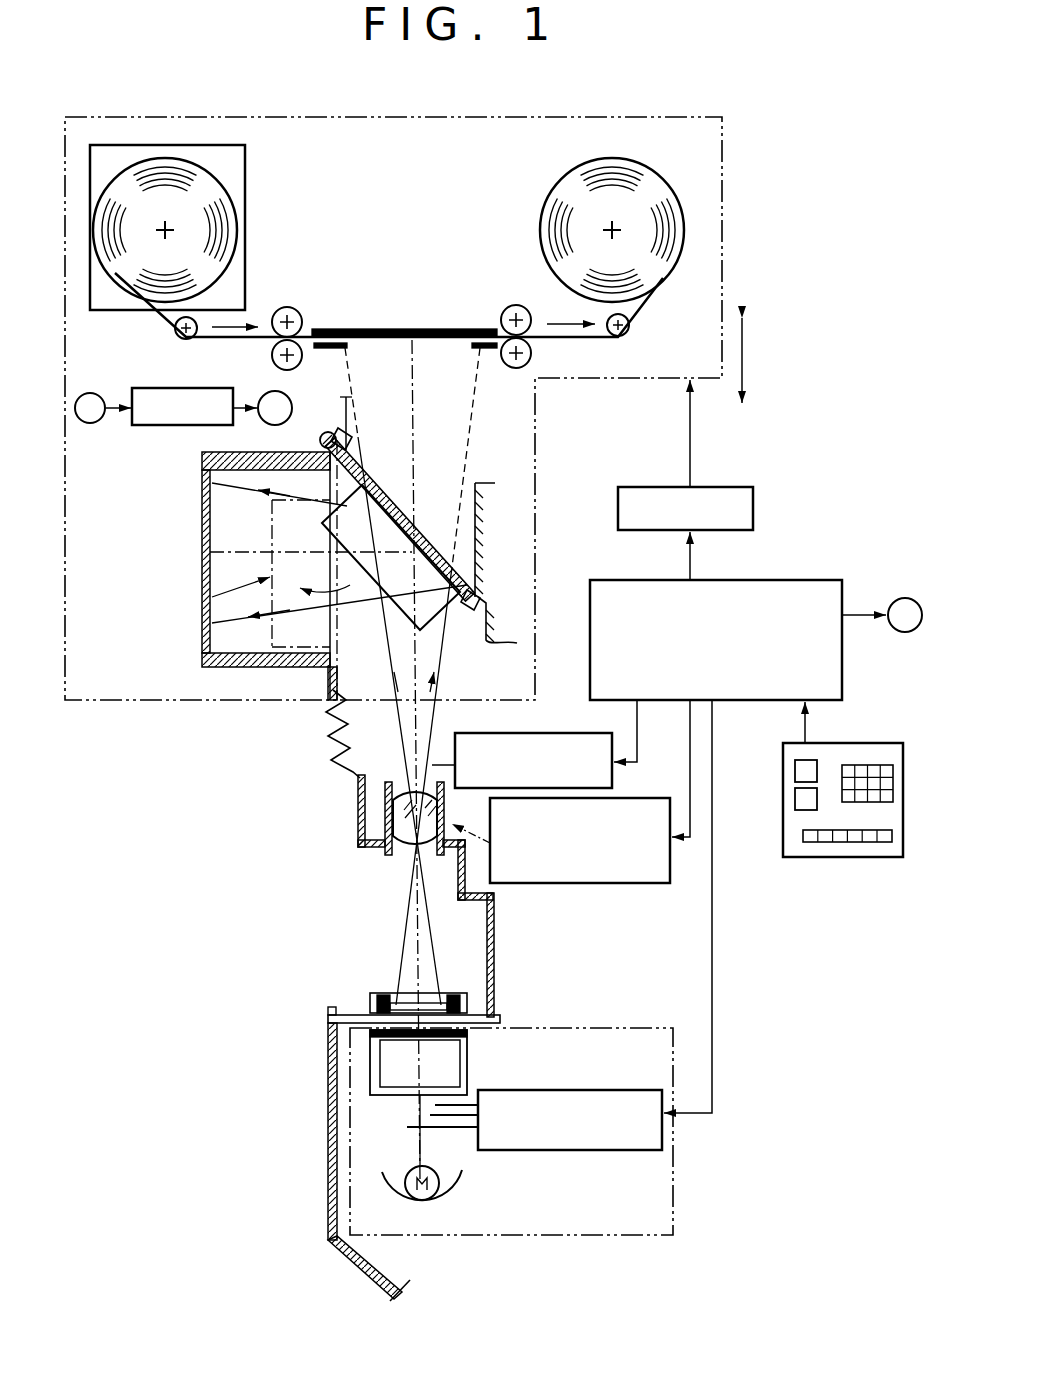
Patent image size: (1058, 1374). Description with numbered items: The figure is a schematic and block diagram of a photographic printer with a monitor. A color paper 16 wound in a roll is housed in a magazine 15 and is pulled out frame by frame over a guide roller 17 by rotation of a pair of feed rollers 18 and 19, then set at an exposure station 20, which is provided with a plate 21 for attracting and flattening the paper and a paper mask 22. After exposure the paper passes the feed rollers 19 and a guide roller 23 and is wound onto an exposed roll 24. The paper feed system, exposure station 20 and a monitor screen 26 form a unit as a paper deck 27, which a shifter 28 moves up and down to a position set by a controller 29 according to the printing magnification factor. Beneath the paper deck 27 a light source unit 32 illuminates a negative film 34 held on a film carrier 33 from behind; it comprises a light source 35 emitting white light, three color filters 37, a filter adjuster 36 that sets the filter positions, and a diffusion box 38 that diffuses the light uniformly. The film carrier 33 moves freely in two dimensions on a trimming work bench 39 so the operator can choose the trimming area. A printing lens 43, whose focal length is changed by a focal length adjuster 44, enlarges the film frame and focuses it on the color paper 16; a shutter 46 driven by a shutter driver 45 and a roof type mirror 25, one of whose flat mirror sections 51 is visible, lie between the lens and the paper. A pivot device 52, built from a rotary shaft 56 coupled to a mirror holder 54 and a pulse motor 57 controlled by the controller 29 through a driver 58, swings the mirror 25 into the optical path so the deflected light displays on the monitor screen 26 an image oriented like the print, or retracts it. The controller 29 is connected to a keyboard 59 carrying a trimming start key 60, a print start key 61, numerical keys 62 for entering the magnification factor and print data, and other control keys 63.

The magazine 15 is at (245, 172).
The color paper 16 is at (202, 341).
The guide roller 17 is at (173, 329).
The feed roller 18 is at (289, 306).
The feed roller 19 is at (509, 305).
The exposure station 20 is at (382, 327).
The plate 21 is at (427, 328).
The paper mask 22 is at (484, 350).
The guide roller 23 is at (627, 333).
The exposed roll 24 is at (570, 194).
The roof type mirror 25 is at (208, 605).
The monitor screen 26 is at (202, 575).
The paper deck 27 is at (724, 232).
The shifter 28 is at (754, 496).
The controller 29 is at (758, 580).
The light source unit 32 is at (676, 1180).
The film carrier 33 is at (370, 998).
The negative film 34 is at (400, 996).
The light source 35 is at (440, 1192).
The filter adjuster 36 is at (600, 1151).
The color filters 37 is at (405, 1098).
The diffusion box 38 is at (467, 1064).
The trimming work bench 39 is at (328, 1019).
The printing lens 43 is at (393, 856).
The focal length adjuster 44 is at (600, 884).
The shutter driver 45 is at (518, 733).
The shutter 46 is at (432, 765).
The flat mirror section 51 is at (367, 572).
The pivot device 52 is at (321, 442).
The mirror holder 54 is at (379, 478).
The rotary shaft 56 is at (328, 431).
The pulse motor 57 is at (264, 394).
The driver 58 is at (160, 427).
The keyboard 59 is at (856, 743).
The trimming start key 60 is at (795, 771).
The print start key 61 is at (795, 800).
The numerical keys 62 is at (894, 784).
The control keys 63 is at (846, 842).